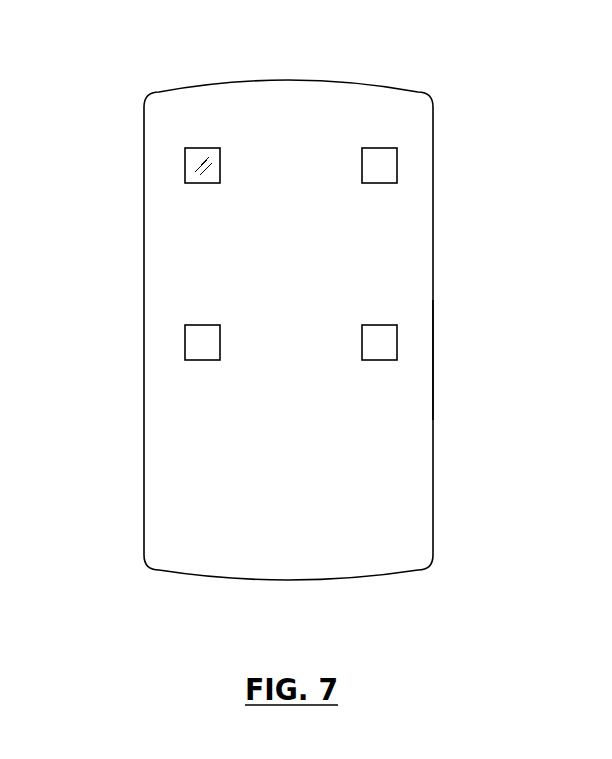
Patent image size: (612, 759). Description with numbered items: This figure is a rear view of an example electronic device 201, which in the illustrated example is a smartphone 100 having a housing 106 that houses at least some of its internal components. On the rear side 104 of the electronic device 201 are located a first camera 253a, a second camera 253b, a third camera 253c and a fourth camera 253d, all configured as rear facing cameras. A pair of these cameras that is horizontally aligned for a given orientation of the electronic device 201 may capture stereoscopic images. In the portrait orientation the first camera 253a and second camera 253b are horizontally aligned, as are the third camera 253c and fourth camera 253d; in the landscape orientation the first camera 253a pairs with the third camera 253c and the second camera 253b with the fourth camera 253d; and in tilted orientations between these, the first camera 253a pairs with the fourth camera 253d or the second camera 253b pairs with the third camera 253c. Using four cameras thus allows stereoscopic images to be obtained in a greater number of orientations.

The smartphone 100 is at (432, 73).
The electronic device 201 is at (342, 61).
The housing 106 is at (433, 422).
The rear side 104 is at (393, 502).
The first camera 253a is at (185, 172).
The second camera 253b is at (387, 173).
The third camera 253c is at (185, 330).
The fourth camera 253d is at (387, 343).